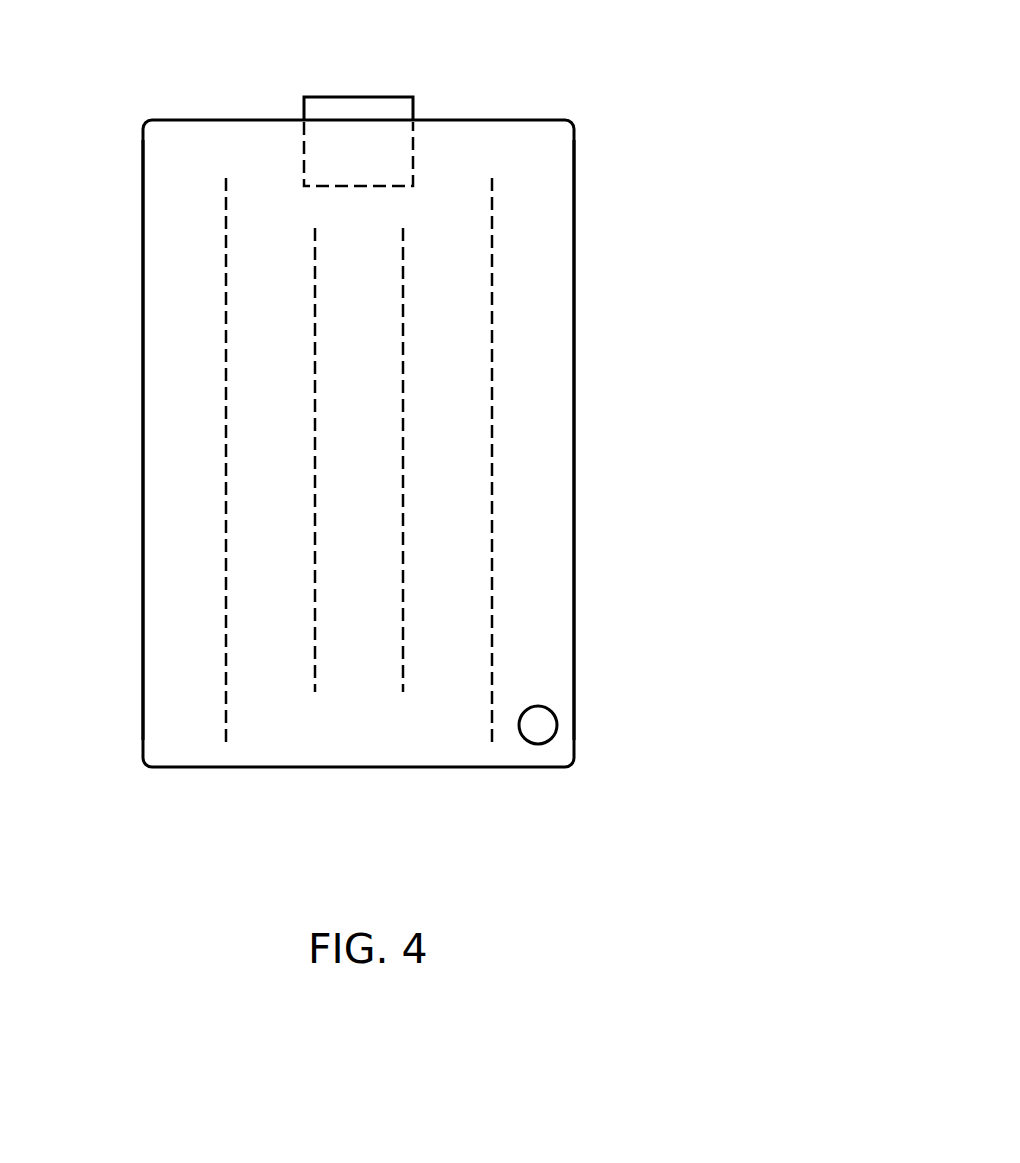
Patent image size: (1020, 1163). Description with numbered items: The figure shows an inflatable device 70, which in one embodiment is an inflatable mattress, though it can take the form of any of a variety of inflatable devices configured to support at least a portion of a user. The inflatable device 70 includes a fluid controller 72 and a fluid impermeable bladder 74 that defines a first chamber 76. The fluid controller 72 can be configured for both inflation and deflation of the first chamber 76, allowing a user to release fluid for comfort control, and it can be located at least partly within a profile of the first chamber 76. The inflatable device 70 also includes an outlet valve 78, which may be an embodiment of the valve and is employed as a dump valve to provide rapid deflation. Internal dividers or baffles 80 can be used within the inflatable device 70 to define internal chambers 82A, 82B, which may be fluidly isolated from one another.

The inflatable device 70 is at (603, 76).
The fluid controller 72 is at (371, 110).
The fluid impermeable bladder 74 is at (575, 175).
The first chamber 76 is at (175, 173).
The outlet valve 78 is at (556, 716).
The internal dividers or baffles 80 is at (492, 463).
The internal chamber 82A is at (185, 663).
The internal chamber 82B is at (275, 668).